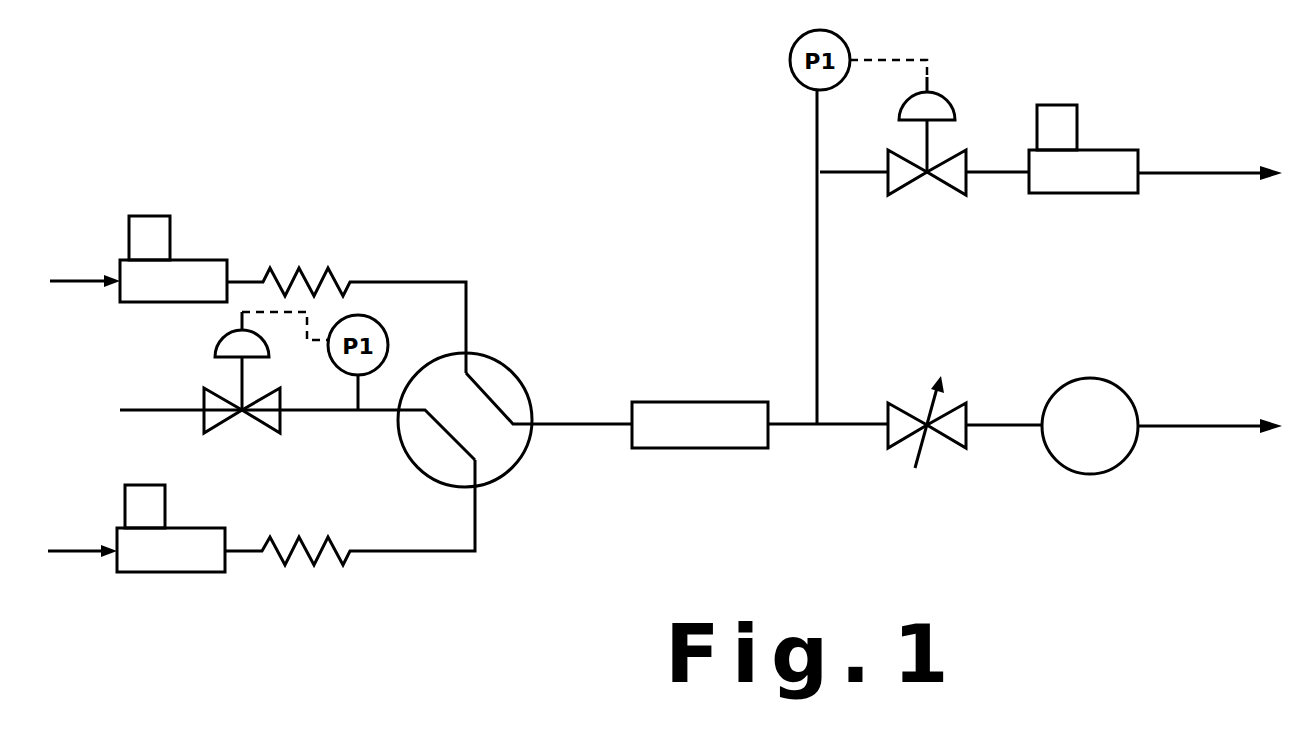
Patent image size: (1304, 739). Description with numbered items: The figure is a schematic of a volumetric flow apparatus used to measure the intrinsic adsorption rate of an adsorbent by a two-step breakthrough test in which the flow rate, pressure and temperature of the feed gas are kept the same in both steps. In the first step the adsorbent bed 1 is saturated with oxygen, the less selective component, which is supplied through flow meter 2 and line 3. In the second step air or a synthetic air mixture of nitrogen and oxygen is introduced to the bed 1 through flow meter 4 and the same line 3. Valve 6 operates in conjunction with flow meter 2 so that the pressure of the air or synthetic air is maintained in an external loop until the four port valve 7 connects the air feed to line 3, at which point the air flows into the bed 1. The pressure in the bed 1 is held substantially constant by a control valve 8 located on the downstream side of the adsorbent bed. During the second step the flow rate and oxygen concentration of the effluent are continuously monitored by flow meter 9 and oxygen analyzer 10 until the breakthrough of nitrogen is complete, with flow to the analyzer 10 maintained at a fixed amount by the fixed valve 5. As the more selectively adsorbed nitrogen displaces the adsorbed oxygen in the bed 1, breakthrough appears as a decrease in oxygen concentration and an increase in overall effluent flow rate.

The adsorbent bed 1 is at (700, 402).
The flow meter 2 is at (207, 260).
The line 3 is at (580, 424).
The flow meter 4 is at (140, 572).
The fixed valve 5 is at (942, 445).
The valve 6 is at (218, 425).
The four port valve 7 is at (510, 470).
The control valve 8 is at (913, 58).
The flow meter 9 is at (1108, 193).
The oxygen analyzer 10 is at (1105, 473).